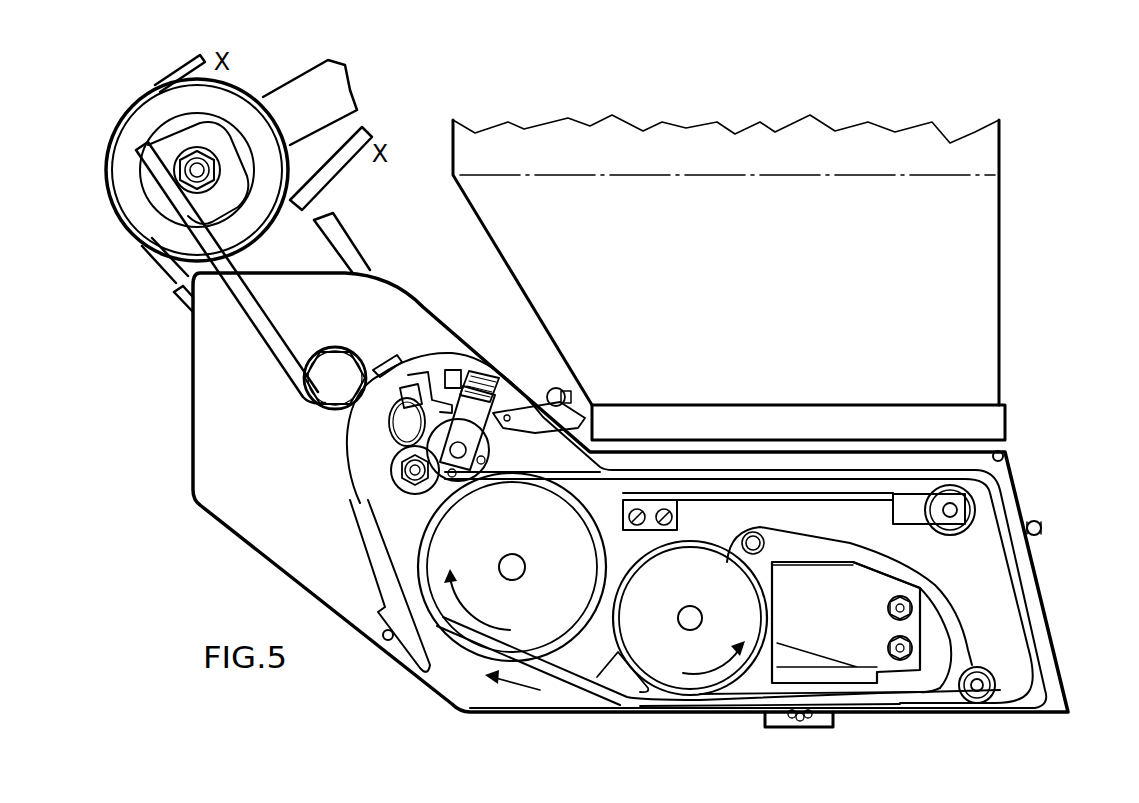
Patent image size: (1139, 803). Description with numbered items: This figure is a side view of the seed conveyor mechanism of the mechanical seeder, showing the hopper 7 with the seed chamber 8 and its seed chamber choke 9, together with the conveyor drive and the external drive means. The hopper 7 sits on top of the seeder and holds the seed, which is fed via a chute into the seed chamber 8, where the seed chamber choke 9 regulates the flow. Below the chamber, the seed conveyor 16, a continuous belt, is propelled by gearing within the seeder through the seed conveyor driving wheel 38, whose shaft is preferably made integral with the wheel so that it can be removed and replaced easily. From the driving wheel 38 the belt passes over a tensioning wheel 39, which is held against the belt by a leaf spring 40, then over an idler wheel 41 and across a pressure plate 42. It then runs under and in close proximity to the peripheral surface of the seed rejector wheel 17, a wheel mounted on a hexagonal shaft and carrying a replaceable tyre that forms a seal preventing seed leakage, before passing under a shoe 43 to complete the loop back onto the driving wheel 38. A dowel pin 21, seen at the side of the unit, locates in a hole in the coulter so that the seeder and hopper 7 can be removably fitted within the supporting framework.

The hopper 7 is at (781, 324).
The seed chamber 8 is at (785, 660).
The seed chamber choke 9 is at (854, 640).
The seed conveyor 16 is at (565, 680).
The seed rejector wheel 17 is at (675, 593).
The dowel pin 21 is at (1042, 529).
The seed conveyor driving wheel 38 is at (488, 533).
The tensioning wheel 39 is at (957, 490).
The leaf spring 40 is at (850, 493).
The idler wheel 41 is at (987, 685).
The pressure plate 42 is at (868, 697).
The shoe 43 is at (633, 687).